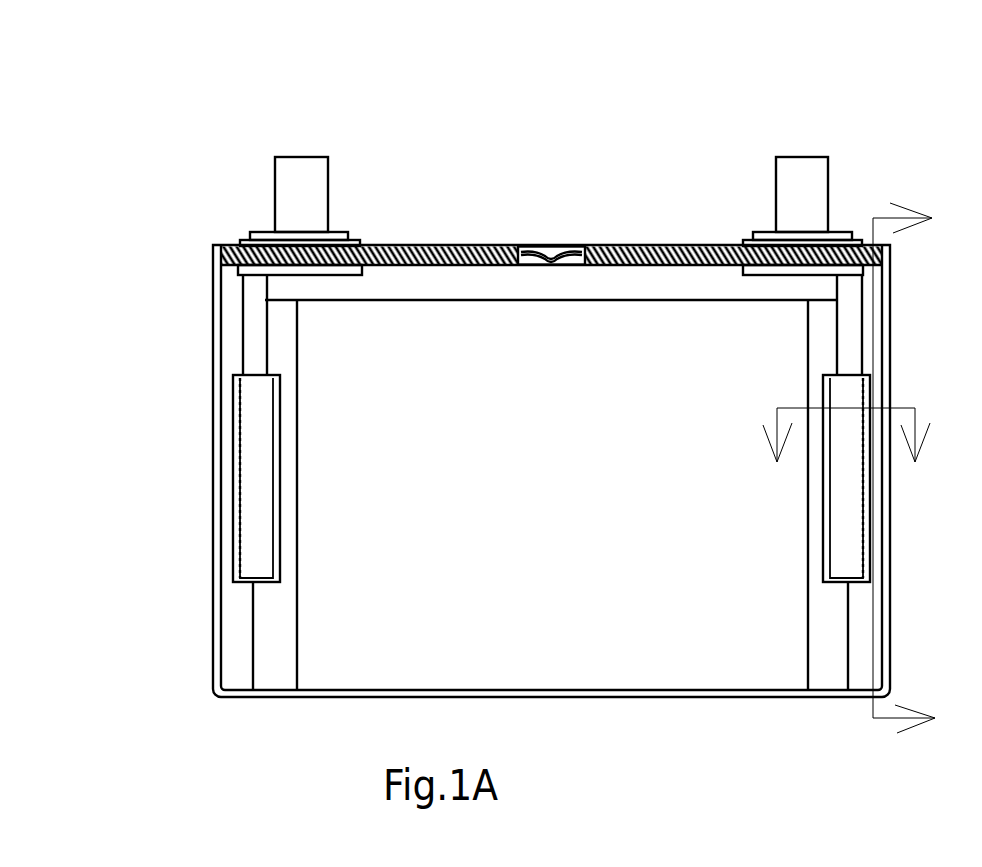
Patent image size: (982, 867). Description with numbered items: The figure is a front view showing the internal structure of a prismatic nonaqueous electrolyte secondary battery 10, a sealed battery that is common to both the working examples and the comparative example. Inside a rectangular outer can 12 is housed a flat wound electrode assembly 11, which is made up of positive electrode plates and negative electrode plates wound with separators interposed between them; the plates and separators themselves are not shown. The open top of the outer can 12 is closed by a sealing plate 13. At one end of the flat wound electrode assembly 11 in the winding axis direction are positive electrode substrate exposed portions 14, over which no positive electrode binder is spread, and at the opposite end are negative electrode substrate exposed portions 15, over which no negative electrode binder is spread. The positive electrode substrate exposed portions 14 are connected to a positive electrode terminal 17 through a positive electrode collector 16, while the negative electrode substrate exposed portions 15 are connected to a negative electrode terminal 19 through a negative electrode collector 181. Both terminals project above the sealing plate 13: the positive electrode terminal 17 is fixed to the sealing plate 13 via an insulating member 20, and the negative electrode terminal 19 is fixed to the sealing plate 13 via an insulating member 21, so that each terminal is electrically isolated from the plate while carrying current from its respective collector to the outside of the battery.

The nonaqueous electrolyte secondary battery 10 is at (172, 138).
The flat wound electrode assembly 11 is at (705, 585).
The outer can 12 is at (217, 653).
The sealing plate 13 is at (592, 246).
The positive electrode substrate exposed portions 14 is at (280, 613).
The negative electrode substrate exposed portions 15 is at (840, 643).
The positive electrode collector 16 is at (248, 423).
The positive electrode terminal 17 is at (317, 172).
The negative electrode collector 181 is at (857, 547).
The negative electrode terminal 19 is at (790, 167).
The insulating member 20 is at (360, 232).
The insulating member 21 is at (747, 238).